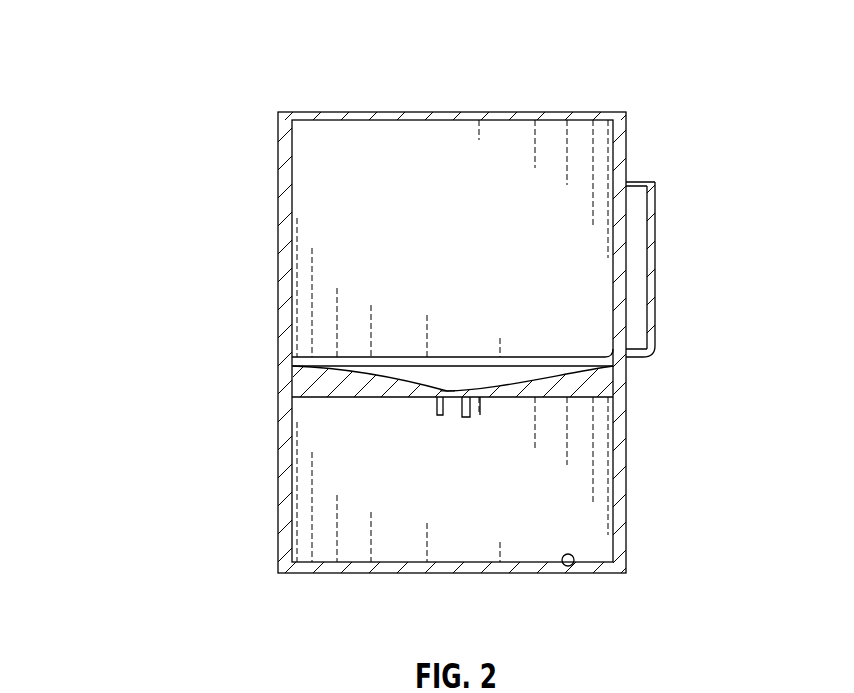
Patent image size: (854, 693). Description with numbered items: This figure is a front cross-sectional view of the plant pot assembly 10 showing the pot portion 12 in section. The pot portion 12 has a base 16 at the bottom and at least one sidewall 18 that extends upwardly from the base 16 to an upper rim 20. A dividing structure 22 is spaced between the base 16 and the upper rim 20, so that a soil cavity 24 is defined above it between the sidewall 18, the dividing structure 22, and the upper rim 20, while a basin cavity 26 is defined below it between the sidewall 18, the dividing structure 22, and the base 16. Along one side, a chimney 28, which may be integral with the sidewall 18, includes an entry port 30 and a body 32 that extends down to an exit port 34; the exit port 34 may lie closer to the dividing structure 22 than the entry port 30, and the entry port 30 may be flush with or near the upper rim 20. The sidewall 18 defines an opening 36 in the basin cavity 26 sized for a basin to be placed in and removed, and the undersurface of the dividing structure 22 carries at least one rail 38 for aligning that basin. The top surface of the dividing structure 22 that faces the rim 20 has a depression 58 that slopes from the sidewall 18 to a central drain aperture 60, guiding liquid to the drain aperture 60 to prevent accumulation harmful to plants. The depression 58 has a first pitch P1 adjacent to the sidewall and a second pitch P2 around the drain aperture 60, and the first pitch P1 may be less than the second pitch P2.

The plant pot assembly 10 is at (134, 52).
The pot portion 12 is at (658, 126).
The base 16 is at (478, 575).
The sidewall 18 is at (285, 250).
The upper rim 20 is at (280, 119).
The dividing structure 22 is at (300, 382).
The soil cavity 24 is at (478, 259).
The basin cavity 26 is at (493, 498).
The chimney 28 is at (663, 270).
The entry port 30 is at (632, 197).
The body 32 is at (655, 318).
The exit port 34 is at (637, 333).
The opening 36 is at (567, 565).
The rail 38 is at (438, 415).
The depression 58 is at (387, 366).
The drain aperture 60 is at (450, 388).
The first pitch P1 is at (322, 357).
The second pitch P2 is at (512, 379).